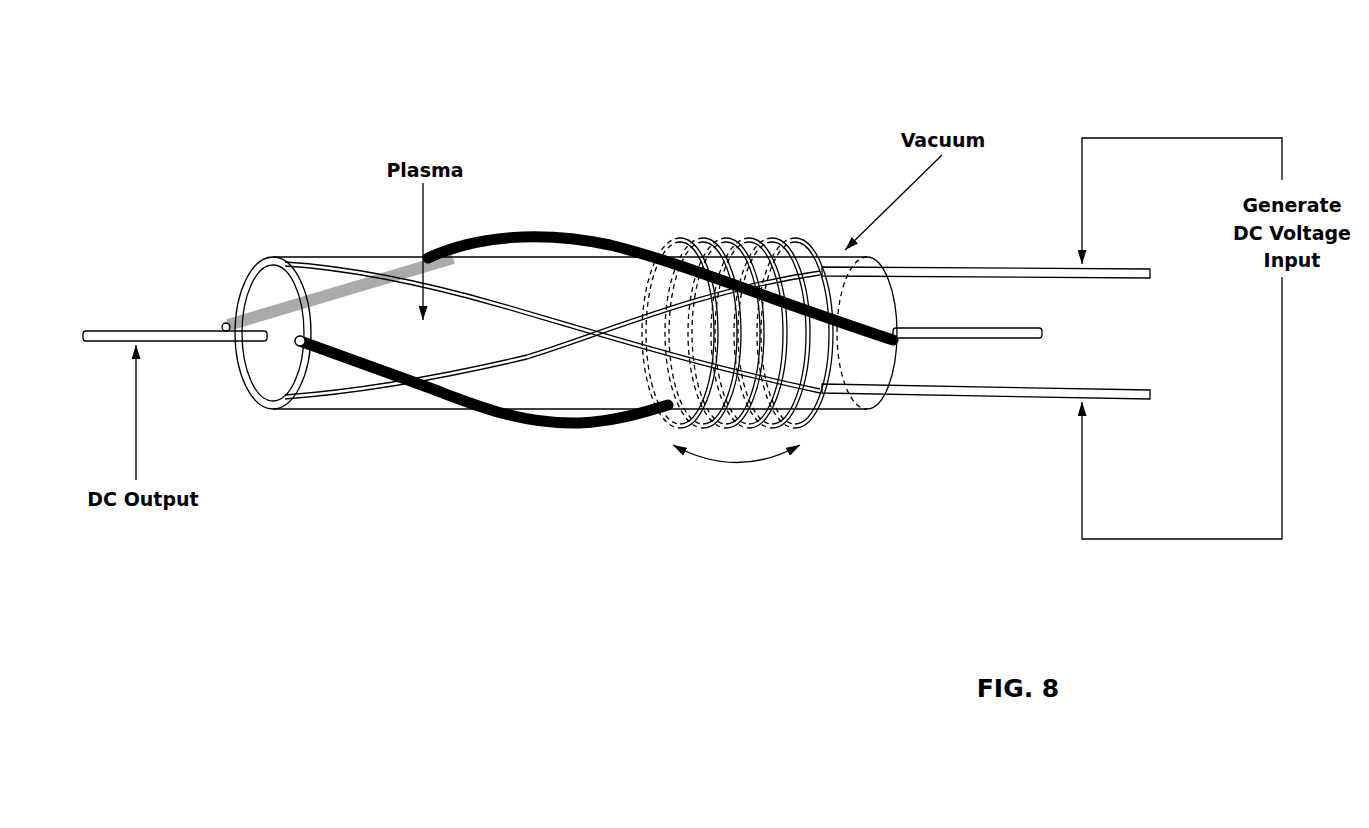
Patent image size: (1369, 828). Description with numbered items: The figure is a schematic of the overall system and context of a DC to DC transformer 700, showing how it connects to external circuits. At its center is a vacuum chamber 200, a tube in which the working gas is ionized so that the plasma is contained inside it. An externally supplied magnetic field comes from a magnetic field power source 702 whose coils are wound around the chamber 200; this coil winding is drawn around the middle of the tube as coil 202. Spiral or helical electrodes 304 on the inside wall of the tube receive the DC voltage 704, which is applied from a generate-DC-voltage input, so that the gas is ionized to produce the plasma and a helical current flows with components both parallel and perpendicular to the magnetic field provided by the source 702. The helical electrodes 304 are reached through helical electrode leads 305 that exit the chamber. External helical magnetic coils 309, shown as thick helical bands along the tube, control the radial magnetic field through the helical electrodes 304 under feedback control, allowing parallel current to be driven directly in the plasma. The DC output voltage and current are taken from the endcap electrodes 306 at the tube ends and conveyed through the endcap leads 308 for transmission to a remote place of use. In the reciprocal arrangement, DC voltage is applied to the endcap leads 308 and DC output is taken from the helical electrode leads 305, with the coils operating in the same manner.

The vacuum chamber 200 is at (323, 412).
The magnetic field coil 202 is at (767, 222).
The spiral or helical electrodes 304 is at (618, 305).
The helical electrode leads 305 is at (955, 267).
The endcap electrodes 306 is at (260, 375).
The endcap leads 308 is at (118, 329).
The external helical magnetic coils 309 is at (625, 235).
The DC to DC transformer 700 is at (330, 160).
The magnetic field power source 702 is at (740, 501).
The DC voltage 704 is at (1143, 130).